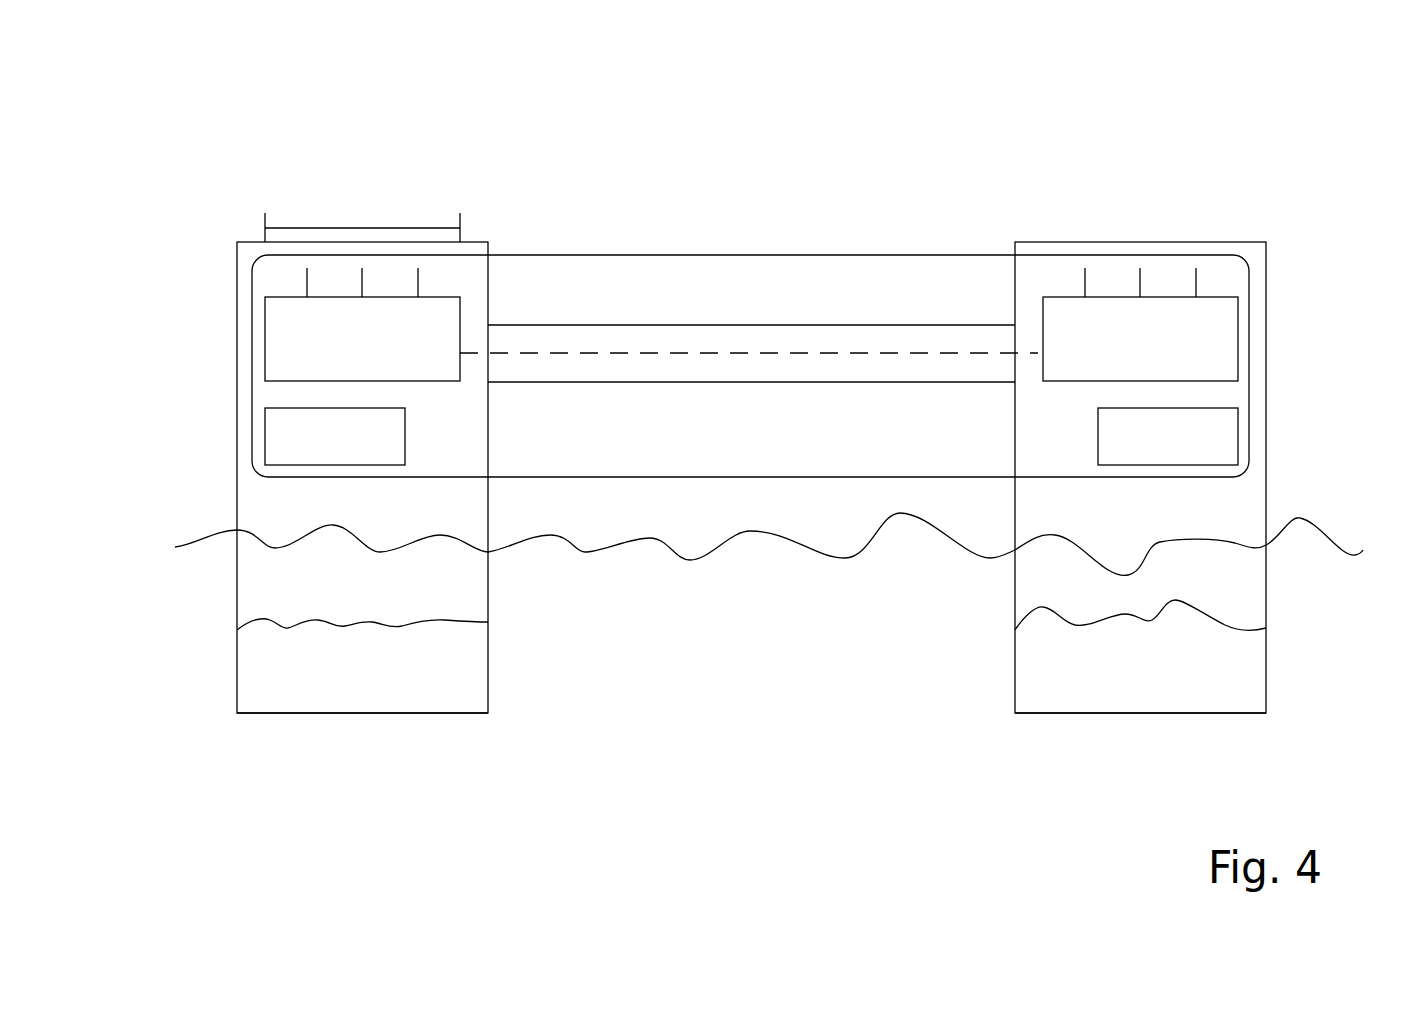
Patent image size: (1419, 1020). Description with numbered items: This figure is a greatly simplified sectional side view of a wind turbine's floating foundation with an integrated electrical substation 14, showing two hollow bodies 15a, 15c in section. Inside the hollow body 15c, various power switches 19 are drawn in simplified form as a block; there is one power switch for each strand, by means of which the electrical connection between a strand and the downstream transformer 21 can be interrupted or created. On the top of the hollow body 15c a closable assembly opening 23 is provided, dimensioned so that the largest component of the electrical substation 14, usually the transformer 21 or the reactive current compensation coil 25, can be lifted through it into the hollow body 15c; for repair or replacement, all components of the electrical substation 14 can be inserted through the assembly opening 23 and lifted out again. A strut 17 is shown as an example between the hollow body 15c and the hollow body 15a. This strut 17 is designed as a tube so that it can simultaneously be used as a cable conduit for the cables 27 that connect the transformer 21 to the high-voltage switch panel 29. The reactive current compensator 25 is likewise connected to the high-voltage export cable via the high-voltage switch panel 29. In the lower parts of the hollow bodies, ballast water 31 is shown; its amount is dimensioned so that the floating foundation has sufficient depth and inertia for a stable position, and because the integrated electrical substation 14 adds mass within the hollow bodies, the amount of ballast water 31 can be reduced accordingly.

The electrical substation 14 is at (970, 255).
The hollow body 15a is at (1266, 672).
The hollow body 15c is at (237, 682).
The strut 17 is at (750, 332).
The power switches 19 is at (265, 429).
The transformer 21 is at (265, 317).
The assembly opening 23 is at (411, 228).
The reactive current compensation coil 25 is at (1238, 317).
The cables 27 is at (866, 352).
The high-voltage switch panel 29 is at (1238, 428).
The ballast water 31 is at (412, 680).